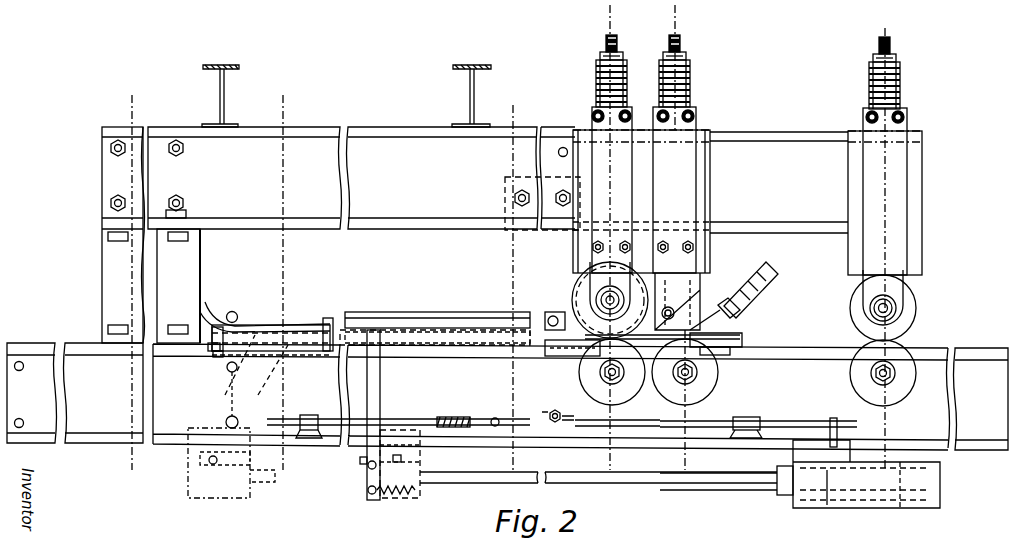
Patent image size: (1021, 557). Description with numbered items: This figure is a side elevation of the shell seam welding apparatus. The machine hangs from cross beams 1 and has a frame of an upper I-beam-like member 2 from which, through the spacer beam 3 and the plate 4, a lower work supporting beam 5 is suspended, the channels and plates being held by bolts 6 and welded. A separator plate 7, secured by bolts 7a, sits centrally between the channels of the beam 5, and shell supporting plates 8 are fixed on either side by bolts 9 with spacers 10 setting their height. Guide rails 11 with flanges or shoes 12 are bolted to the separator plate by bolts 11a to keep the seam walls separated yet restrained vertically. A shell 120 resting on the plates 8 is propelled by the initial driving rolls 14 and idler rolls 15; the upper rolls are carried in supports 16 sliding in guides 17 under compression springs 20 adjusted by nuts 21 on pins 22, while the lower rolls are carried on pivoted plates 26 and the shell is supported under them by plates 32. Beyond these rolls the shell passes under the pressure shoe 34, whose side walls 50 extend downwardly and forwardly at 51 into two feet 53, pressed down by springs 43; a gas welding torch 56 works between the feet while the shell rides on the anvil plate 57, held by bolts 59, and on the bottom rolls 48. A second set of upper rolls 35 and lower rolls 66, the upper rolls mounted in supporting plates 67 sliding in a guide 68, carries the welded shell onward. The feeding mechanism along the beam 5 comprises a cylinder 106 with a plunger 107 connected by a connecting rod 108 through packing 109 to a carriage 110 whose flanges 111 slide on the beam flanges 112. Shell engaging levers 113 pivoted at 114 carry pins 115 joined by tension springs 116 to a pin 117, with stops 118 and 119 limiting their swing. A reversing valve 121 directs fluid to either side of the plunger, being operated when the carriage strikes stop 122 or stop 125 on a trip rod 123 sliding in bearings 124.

The cross beams 1 is at (472, 95).
The upper beam 2 is at (387, 153).
The spacer beam 3 is at (220, 258).
The plate 4 is at (520, 270).
The lower work supporting beam 5 is at (50, 324).
The bolts 6 is at (186, 152).
The separator plate 7 is at (215, 308).
The bolts 7a is at (228, 413).
The shell supporting plates 8 is at (293, 308).
The bolts 9 is at (218, 357).
The spacers 10 is at (210, 350).
The guide rails 11 is at (402, 316).
The bolts 11a is at (234, 312).
The flanges or shoes 12 is at (363, 327).
The upper driving rolls 14 is at (590, 290).
The lower rolls 15 is at (640, 382).
The roll supports 16 is at (627, 203).
The guides 17 is at (580, 237).
The compression springs 20 is at (598, 78).
The nuts 21 is at (686, 56).
The pins 22 is at (682, 42).
The plates 26 is at (562, 411).
The plates 32 is at (572, 325).
The pressure shoe 34 is at (685, 297).
The upper rolls 35 is at (915, 298).
The springs 43 is at (690, 81).
The bottom rolls 48 is at (710, 390).
The side walls 50 is at (680, 287).
The downwardly and forwardly extending portion 51 is at (705, 311).
The feet 53 is at (739, 316).
The gas welding torch 56 is at (763, 283).
The anvil plate 57 is at (743, 345).
The bolts 59 is at (727, 353).
The lower rolls 66 is at (904, 385).
The supporting plates 67 is at (898, 162).
The guide 68 is at (916, 172).
The cylinder 106 is at (875, 502).
The plunger 107 is at (910, 504).
The connecting rod 108 is at (728, 492).
The packing 109 is at (778, 500).
The carriage 110 is at (420, 466).
The flanges 111 is at (406, 432).
The flanges 112 is at (466, 436).
The shell engaging levers 113 is at (383, 384).
The pivot 114 is at (368, 465).
The pin 115 is at (375, 490).
The tension spring 116 is at (386, 493).
The pin 117 is at (418, 493).
The stop 118 is at (185, 457).
The stop 119 is at (235, 456).
The shell 120 is at (475, 335).
The reversing valve 121 is at (800, 458).
The stop 122 is at (616, 427).
The trip rod 123 is at (662, 371).
The bearings 124 is at (748, 420).
The stop 125 is at (360, 415).